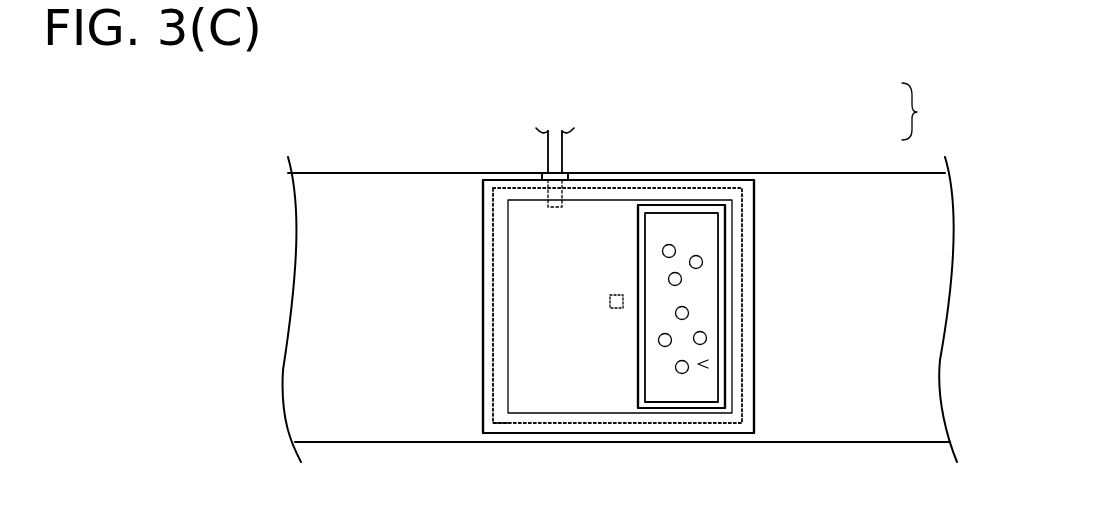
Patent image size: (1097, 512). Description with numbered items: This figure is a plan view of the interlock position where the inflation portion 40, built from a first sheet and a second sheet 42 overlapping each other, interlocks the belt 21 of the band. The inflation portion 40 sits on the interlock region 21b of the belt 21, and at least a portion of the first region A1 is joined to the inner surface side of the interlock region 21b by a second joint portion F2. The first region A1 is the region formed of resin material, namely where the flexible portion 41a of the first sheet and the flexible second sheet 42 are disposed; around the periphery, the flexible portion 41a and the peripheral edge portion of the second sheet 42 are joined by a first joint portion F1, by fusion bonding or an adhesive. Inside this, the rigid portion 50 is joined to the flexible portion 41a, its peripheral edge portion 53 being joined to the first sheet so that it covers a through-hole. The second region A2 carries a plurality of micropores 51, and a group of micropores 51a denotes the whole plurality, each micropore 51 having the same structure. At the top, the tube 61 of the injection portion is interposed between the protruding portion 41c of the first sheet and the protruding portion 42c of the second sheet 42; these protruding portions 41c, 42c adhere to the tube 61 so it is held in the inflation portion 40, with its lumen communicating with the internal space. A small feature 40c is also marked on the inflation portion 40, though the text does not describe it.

The belt 21 is at (427, 436).
The interlock region 21b is at (493, 436).
The inflation portion 40 is at (470, 192).
The hole 40c is at (610, 300).
The flexible portion 41a is at (752, 212).
The protruding portion 41c is at (490, 137).
The second sheet 42 is at (750, 253).
The protruding portion 42c is at (543, 172).
The tube 61 is at (567, 155).
The rigid portion 50 is at (735, 306).
The micropore 51 is at (712, 342).
The group of micropores 51a is at (728, 345).
The peripheral edge portion 53 is at (722, 263).
The first region A1 is at (927, 111).
The second region A2 is at (828, 304).
The first joint portion F1 is at (682, 418).
The second joint portion F2 is at (497, 423).